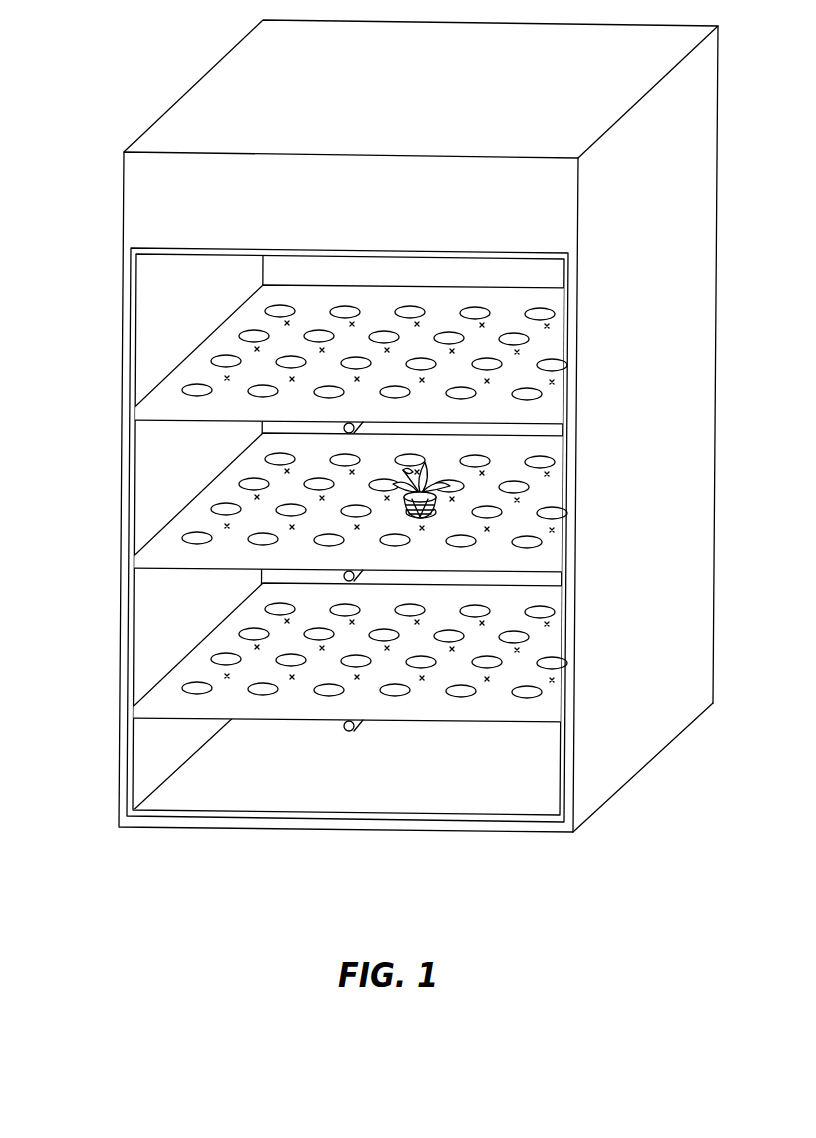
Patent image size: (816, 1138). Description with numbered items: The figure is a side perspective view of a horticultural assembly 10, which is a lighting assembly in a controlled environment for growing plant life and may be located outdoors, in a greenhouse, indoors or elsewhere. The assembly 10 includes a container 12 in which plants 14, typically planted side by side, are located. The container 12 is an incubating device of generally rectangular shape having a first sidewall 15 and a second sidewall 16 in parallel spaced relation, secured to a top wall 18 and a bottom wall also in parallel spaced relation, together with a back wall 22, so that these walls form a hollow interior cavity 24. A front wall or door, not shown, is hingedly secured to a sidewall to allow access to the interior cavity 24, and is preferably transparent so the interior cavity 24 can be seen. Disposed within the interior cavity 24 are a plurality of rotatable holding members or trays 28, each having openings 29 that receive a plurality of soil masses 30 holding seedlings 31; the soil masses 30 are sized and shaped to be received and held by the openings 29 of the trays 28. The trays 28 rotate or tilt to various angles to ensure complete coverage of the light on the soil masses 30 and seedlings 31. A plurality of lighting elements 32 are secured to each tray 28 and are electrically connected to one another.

The horticultural assembly 10 is at (143, 53).
The container 12 is at (115, 185).
The plant 14 is at (428, 482).
The first sidewall 15 is at (122, 392).
The second sidewall 16 is at (674, 429).
The top wall 18 is at (438, 74).
The back wall 22 is at (717, 400).
The interior cavity 24 is at (324, 576).
The tray 28 is at (498, 318).
The opening 29 is at (346, 359).
The soil mass 30 is at (428, 508).
The seedling 31 is at (405, 508).
The lighting element 32 is at (231, 383).